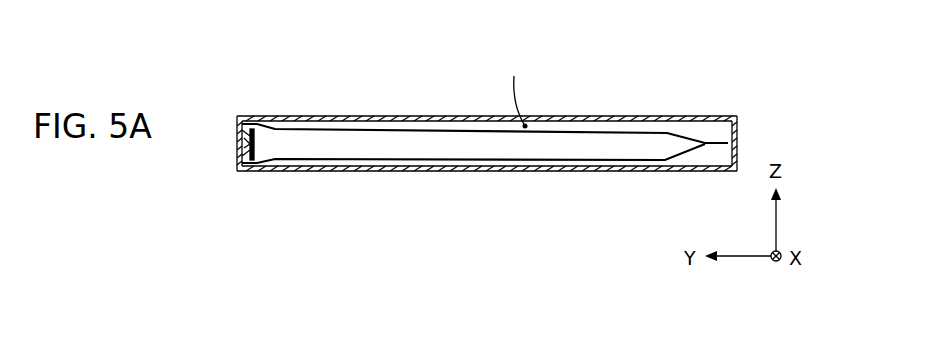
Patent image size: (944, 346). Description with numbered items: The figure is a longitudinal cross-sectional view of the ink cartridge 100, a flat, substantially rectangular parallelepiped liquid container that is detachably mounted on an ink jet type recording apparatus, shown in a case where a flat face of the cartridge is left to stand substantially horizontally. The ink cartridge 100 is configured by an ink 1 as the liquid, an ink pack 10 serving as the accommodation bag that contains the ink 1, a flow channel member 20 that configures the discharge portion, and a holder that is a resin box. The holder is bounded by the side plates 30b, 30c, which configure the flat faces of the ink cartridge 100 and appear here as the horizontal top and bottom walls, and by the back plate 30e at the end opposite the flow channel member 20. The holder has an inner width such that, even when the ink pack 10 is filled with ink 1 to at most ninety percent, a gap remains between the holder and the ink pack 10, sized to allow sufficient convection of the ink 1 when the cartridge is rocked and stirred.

The ink cartridge 100 is at (688, 71).
The ink 1 is at (485, 150).
The ink pack 10 is at (567, 133).
The flow channel member 20 is at (240, 144).
The side plate 30b is at (397, 172).
The side plate 30c is at (400, 116).
The back plate 30e is at (738, 145).